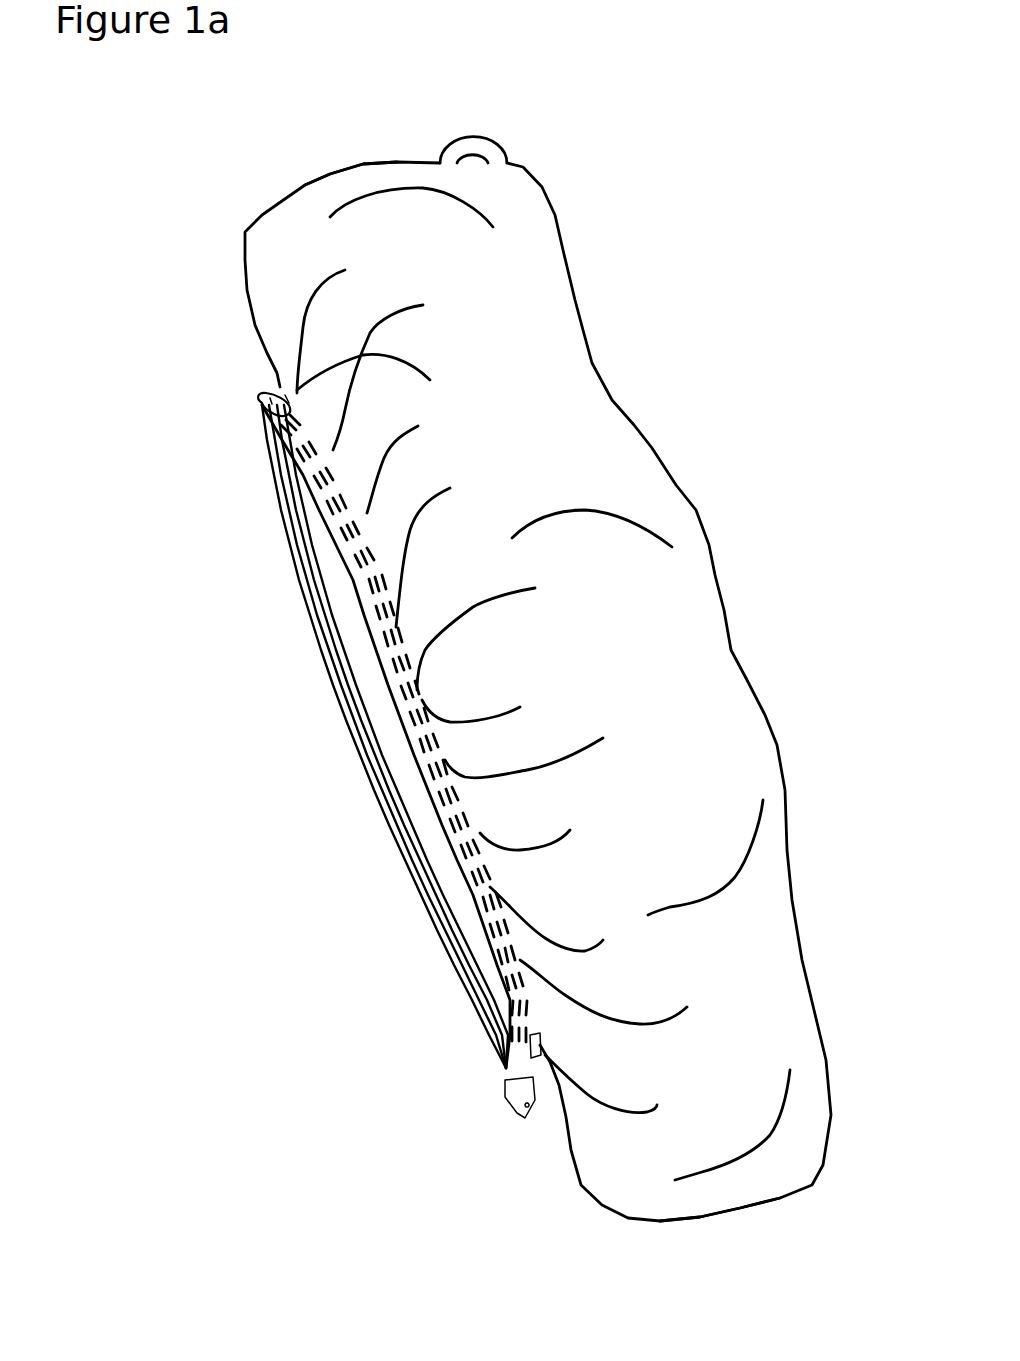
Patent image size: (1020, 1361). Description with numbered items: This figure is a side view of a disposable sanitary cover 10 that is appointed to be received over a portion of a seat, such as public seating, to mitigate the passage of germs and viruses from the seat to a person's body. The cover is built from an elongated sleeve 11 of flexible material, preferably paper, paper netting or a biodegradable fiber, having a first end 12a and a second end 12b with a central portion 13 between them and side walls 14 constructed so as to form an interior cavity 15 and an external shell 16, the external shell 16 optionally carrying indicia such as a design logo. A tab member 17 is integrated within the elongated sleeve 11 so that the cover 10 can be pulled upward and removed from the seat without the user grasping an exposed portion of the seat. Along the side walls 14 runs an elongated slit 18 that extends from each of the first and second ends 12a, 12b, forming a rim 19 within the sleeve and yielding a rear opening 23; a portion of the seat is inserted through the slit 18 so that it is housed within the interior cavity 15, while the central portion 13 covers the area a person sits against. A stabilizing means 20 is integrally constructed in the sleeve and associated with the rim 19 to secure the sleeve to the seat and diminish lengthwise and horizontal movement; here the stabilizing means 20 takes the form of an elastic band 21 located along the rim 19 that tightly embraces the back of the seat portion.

The disposable sanitary cover 10 is at (220, 173).
The elongated sleeve 11 is at (652, 447).
The first end 12a is at (330, 170).
The second end 12b is at (718, 1208).
The central portion 13 is at (683, 600).
The side walls 14 is at (262, 403).
The interior cavity 15 is at (398, 730).
The external shell 16 is at (592, 363).
The tab member 17 is at (478, 135).
The elongated slit 18 is at (440, 857).
The rim 19 is at (290, 537).
The stabilizing means 20 is at (266, 478).
The elastic band 21 is at (335, 637).
The rear opening 23 is at (370, 660).